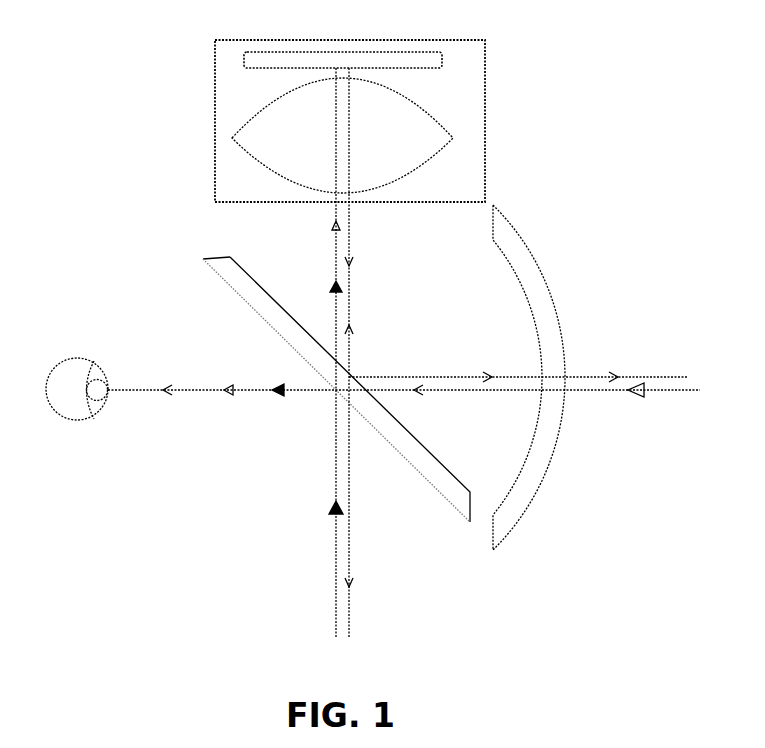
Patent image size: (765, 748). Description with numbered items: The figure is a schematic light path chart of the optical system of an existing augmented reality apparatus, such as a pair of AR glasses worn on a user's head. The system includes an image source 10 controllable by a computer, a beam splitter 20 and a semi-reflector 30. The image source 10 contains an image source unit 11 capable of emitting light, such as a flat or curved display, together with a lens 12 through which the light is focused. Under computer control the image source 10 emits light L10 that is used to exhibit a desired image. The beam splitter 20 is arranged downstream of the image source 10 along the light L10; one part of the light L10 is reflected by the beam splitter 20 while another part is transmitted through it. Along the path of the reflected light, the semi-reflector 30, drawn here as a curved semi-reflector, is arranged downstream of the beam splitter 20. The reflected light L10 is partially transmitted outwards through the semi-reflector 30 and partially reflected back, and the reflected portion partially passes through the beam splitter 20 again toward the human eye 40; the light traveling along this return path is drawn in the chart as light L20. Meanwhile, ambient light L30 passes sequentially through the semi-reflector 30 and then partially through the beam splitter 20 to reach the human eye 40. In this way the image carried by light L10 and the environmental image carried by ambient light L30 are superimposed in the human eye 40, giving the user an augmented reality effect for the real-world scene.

The image source 10 is at (216, 109).
The image source unit 11 is at (312, 60).
The lens 12 is at (430, 133).
The beam splitter 20 is at (203, 259).
The semi-reflector 30 is at (553, 317).
The human eye 40 is at (71, 373).
The light L10 is at (404, 352).
The light beam L20 is at (301, 352).
The ambient light L30 is at (425, 331).